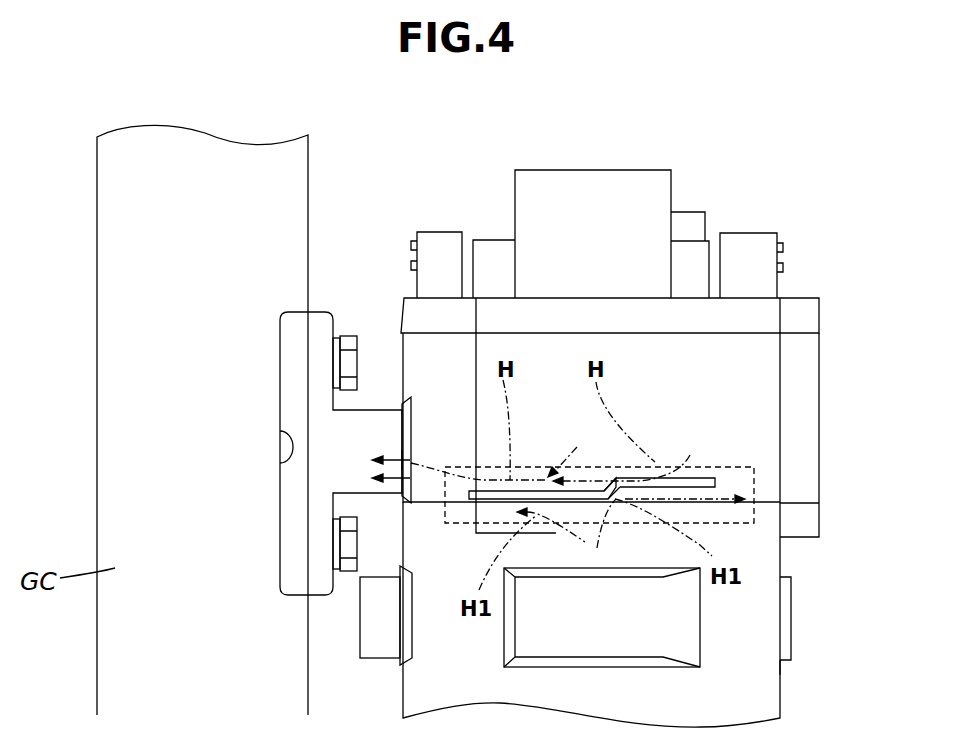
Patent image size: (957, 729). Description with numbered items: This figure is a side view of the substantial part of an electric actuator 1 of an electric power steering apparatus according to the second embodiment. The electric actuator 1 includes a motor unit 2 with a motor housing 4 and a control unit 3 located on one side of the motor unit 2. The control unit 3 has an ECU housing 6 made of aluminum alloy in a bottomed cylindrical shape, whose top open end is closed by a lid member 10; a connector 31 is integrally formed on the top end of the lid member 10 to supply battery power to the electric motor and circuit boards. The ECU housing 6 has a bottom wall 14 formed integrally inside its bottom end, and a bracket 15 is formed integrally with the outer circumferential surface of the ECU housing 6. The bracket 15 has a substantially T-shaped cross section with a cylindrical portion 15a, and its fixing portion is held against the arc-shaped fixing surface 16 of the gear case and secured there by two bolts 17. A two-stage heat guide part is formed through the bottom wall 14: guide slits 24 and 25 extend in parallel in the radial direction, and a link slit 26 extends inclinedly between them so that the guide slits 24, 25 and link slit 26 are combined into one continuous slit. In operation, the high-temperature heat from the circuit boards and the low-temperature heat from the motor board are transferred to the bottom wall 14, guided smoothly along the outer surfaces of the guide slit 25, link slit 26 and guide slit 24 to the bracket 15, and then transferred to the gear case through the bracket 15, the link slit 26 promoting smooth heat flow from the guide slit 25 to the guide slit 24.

The electric actuator 1 is at (820, 600).
The motor unit 2 is at (795, 676).
The control unit 3 is at (828, 393).
The motor housing 4 is at (772, 700).
The ECU housing 6 is at (768, 373).
The lid member 10 is at (766, 316).
The bottom wall 14 is at (755, 490).
The bracket 15 is at (378, 400).
The cylindrical portion 15a is at (400, 460).
The fixing surface 16 is at (283, 462).
The bolt 17 is at (346, 338).
The guide slit 24 is at (481, 494).
The guide slit 25 is at (698, 470).
The link slit 26 is at (610, 492).
The connector 31 is at (753, 240).